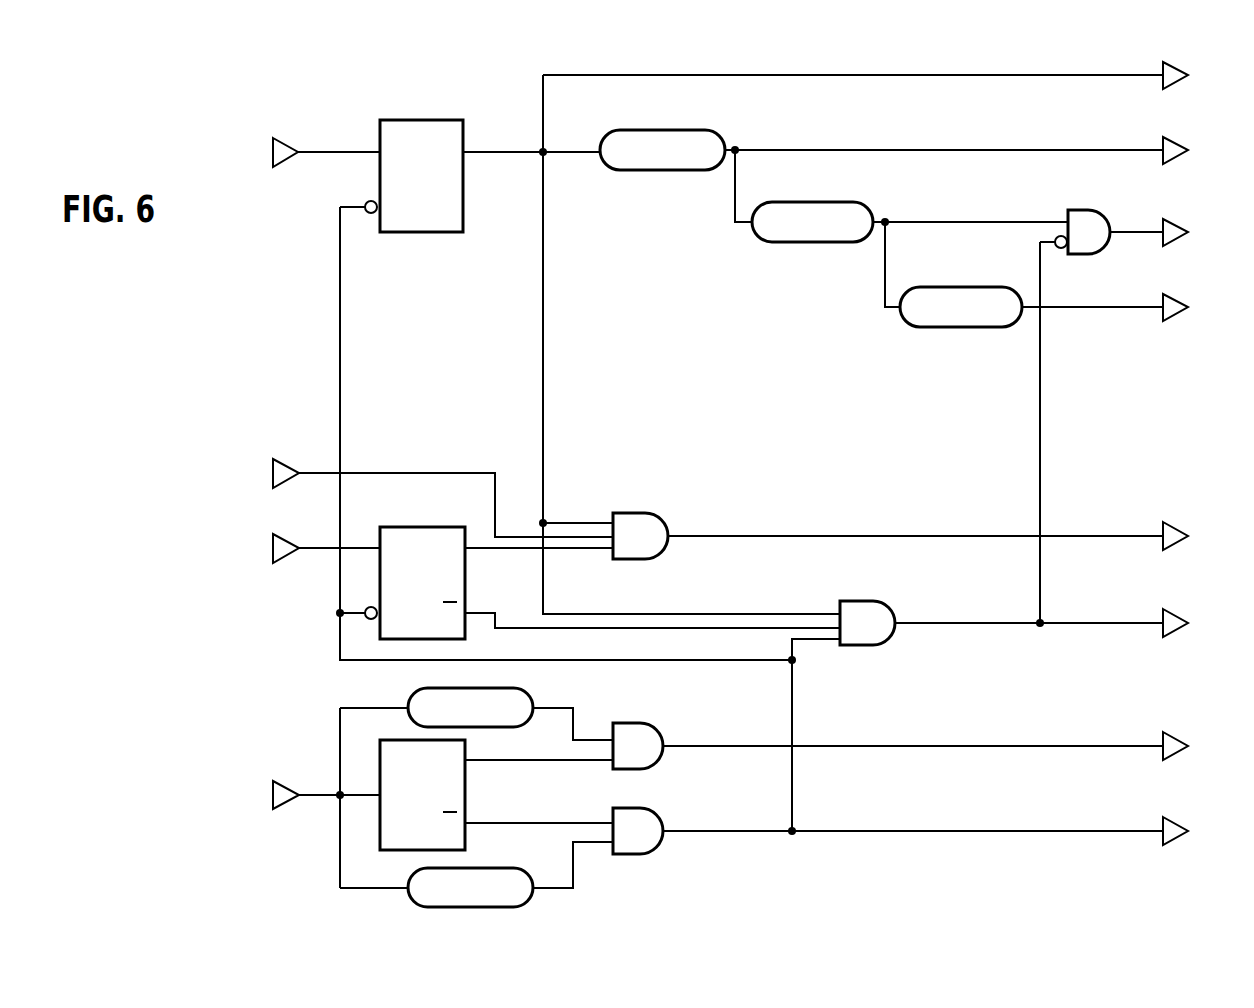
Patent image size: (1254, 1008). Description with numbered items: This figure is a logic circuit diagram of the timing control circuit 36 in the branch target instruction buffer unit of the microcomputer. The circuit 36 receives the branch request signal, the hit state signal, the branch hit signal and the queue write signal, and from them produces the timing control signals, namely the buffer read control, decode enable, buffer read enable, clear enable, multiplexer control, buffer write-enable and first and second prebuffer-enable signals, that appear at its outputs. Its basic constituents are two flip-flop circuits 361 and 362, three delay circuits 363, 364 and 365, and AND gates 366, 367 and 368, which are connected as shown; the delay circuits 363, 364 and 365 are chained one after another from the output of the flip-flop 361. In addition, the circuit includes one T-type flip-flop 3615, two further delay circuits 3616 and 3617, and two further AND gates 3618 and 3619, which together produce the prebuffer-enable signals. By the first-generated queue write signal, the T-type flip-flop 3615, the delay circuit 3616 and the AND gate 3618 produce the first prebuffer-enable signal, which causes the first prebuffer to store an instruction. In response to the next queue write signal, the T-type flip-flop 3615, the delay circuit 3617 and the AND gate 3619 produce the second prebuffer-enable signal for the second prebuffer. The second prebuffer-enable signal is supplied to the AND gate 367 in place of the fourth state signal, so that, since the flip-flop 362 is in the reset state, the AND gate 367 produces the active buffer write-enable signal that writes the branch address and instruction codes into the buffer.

The timing control circuit 36 is at (369, 98).
The flip-flop circuit 361 is at (446, 124).
The flip-flop circuit 362 is at (428, 527).
The delay circuit 363 is at (694, 134).
The delay circuit 364 is at (861, 215).
The delay circuit 365 is at (961, 290).
The AND gate 366 is at (1098, 220).
The AND gate 367 is at (867, 604).
The AND gate 368 is at (644, 519).
The T-type flip-flop 3615 is at (466, 797).
The delay circuit 3616 is at (533, 696).
The delay circuit 3617 is at (505, 876).
The AND gate 3618 is at (638, 733).
The AND gate 3619 is at (650, 826).